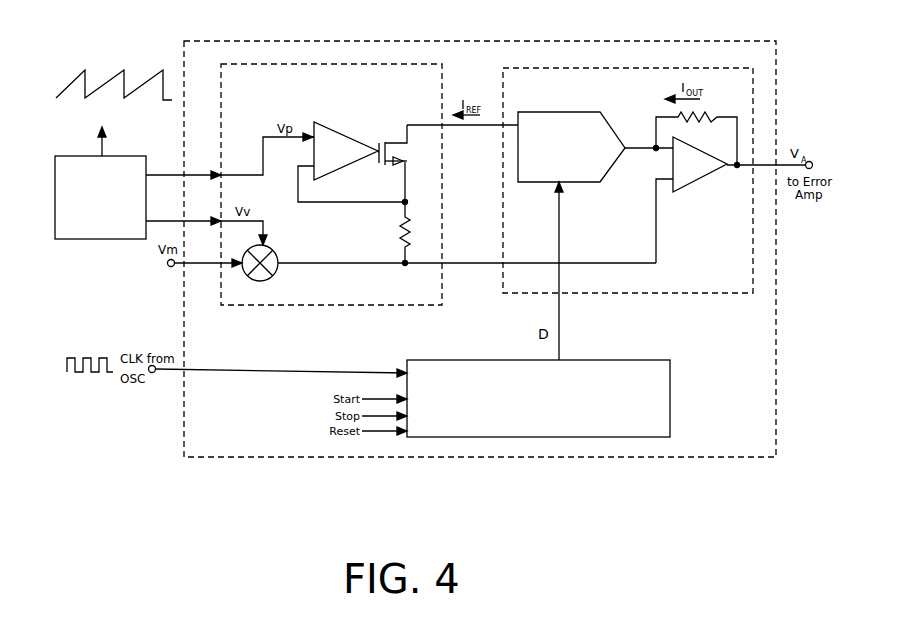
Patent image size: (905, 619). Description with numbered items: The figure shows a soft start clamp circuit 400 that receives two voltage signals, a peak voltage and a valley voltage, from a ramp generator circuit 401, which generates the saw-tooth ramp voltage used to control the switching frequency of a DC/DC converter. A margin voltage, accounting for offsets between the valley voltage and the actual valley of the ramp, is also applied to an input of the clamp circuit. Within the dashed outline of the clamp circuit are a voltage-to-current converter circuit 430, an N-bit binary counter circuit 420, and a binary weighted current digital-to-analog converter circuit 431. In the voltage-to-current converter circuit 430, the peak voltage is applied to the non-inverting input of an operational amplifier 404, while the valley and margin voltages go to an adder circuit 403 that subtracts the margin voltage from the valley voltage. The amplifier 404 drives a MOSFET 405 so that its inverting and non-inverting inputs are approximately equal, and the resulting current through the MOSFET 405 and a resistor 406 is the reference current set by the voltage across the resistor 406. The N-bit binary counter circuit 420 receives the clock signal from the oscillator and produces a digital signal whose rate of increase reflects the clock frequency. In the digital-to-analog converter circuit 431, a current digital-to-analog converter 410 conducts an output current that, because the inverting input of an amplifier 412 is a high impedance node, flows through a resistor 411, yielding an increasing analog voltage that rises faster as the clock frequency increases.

The soft start clamp circuit 400 is at (432, 41).
The ramp generator circuit 401 is at (100, 240).
The adder circuit 403 is at (273, 251).
The operational amplifier 404 is at (341, 134).
The MOSFET 405 is at (379, 163).
The resistor 406 is at (398, 241).
The current digital-to-analog converter 410 is at (588, 182).
The resistor 411 is at (711, 113).
The amplifier 412 is at (702, 178).
The N-bit binary counter circuit 420 is at (638, 360).
The voltage-to-current converter circuit 430 is at (302, 305).
The binary weighted current digital-to-analog converter circuit 431 is at (662, 293).